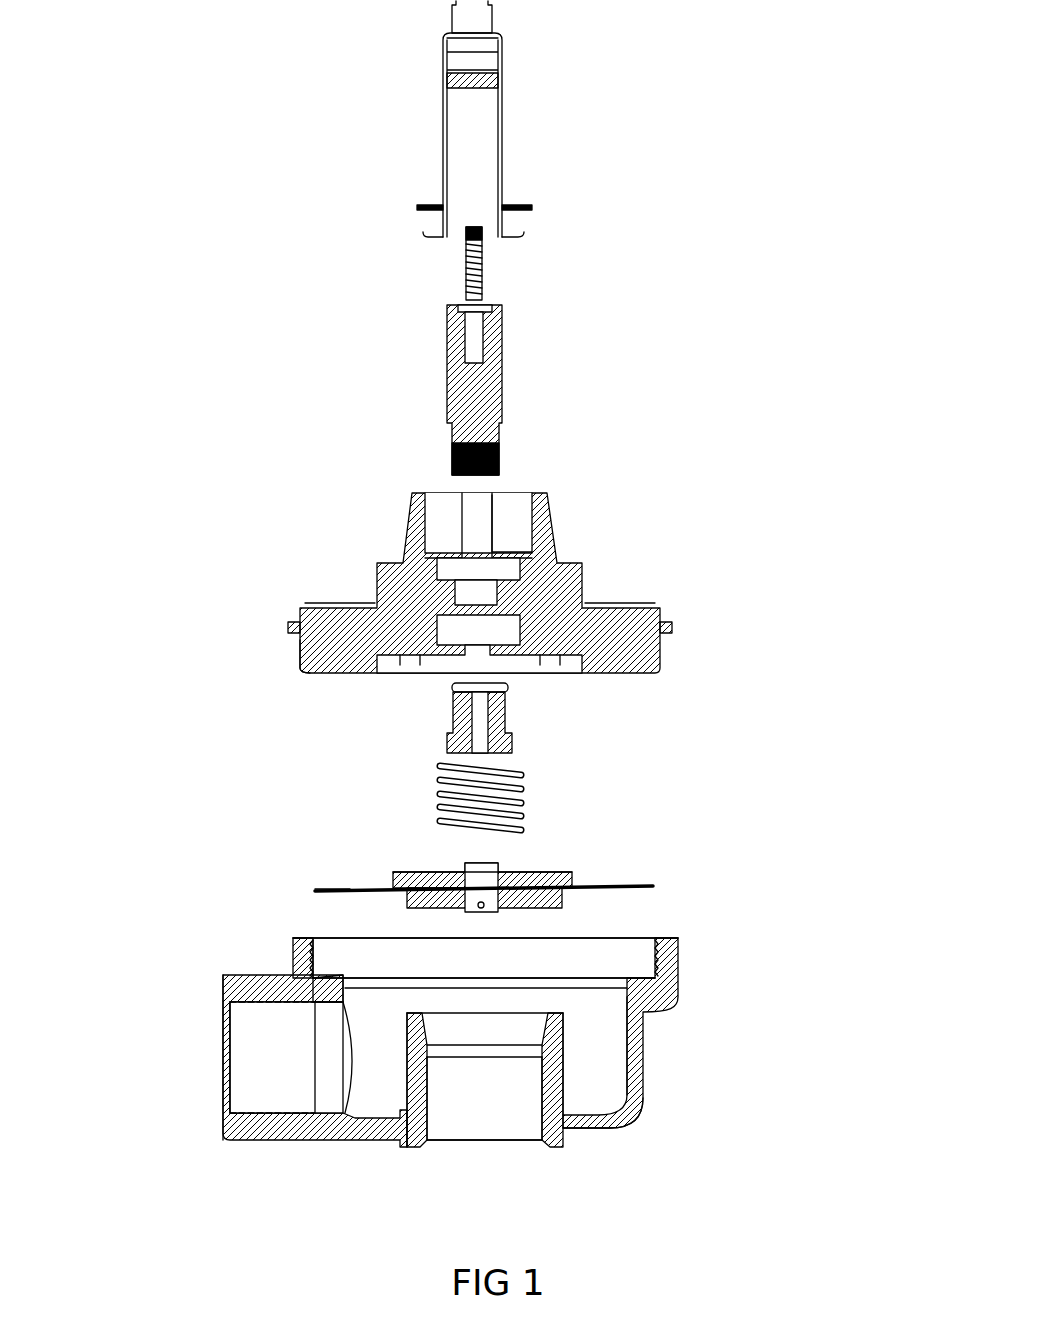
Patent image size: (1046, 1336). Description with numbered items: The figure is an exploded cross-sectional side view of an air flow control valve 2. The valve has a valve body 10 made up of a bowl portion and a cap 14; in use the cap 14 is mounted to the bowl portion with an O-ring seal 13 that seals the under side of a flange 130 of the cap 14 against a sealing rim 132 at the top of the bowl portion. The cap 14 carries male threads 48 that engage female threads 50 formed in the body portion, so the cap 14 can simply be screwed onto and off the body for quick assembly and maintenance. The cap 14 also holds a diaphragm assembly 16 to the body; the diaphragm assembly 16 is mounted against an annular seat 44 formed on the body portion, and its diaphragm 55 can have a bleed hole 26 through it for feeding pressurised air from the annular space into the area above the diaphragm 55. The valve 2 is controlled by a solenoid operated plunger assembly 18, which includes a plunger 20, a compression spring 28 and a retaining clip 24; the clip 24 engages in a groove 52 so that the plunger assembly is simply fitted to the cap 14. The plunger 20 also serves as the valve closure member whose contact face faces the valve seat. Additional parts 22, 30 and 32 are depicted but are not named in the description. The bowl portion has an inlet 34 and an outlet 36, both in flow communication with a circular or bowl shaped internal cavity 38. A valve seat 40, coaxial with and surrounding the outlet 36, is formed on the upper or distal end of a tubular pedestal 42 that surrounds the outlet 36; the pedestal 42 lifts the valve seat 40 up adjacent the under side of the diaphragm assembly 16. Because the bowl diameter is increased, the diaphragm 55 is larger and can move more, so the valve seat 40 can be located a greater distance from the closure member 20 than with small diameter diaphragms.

The flow control valve 2 is at (268, 516).
The valve body 10 is at (657, 1072).
The O-ring seal 13 is at (292, 640).
The cap 14 is at (663, 607).
The diaphragm assembly 16 is at (664, 886).
The solenoid operated plunger assembly 18 is at (514, 80).
The plunger 20 is at (513, 362).
The screw 22 is at (487, 262).
The retaining clip 24 is at (540, 204).
The bleed hole 26 is at (612, 876).
The compression spring 28 is at (530, 787).
The stem end 30 is at (505, 467).
The seat ring 32 is at (513, 720).
The inlet 34 is at (258, 1072).
The outlet 36 is at (480, 1113).
The internal cavity 38 is at (600, 1033).
The valve seat 40 is at (410, 1006).
The tubular pedestal 42 is at (400, 1093).
The annular seat 44 is at (605, 970).
The male threads 48 is at (665, 643).
The female threads 50 is at (315, 953).
The groove 52 is at (510, 540).
The diaphragm 55 is at (342, 887).
The flange 130 is at (285, 633).
The sealing rim 132 is at (290, 938).